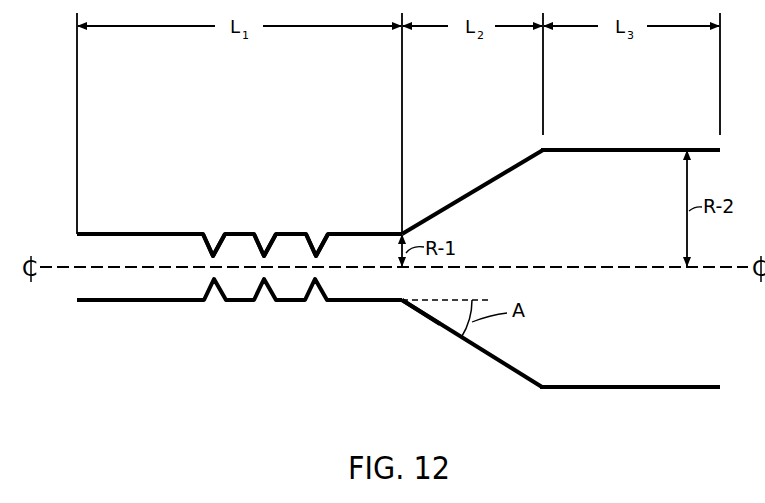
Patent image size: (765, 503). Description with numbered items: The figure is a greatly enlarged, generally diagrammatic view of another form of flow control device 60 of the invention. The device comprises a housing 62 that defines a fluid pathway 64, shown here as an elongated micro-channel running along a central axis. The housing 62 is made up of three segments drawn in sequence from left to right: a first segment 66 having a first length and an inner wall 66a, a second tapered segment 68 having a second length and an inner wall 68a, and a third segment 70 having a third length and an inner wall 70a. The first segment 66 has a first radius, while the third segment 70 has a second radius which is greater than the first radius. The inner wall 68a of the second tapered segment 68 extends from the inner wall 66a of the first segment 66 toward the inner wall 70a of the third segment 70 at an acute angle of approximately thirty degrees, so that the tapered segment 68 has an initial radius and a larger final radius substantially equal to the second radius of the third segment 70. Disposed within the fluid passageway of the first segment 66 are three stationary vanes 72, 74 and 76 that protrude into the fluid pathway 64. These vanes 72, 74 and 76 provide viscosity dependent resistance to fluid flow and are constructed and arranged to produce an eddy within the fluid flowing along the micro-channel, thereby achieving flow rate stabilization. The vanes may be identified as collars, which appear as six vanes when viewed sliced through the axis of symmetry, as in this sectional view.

The flow control device 60 is at (329, 324).
The housing 62 is at (471, 343).
The fluid pathway 64 is at (91, 264).
The first segment 66 is at (144, 301).
The inner wall of first segment 66a is at (170, 299).
The second tapered segment 68 is at (490, 180).
The inner wall of second tapered segment 68a is at (508, 362).
The third segment 70 is at (630, 149).
The inner wall of third segment 70a is at (607, 386).
The stationary vane 72 is at (207, 251).
The stationary vane 74 is at (280, 242).
The stationary vane 76 is at (321, 244).